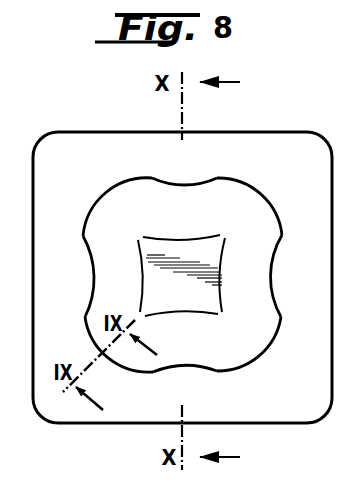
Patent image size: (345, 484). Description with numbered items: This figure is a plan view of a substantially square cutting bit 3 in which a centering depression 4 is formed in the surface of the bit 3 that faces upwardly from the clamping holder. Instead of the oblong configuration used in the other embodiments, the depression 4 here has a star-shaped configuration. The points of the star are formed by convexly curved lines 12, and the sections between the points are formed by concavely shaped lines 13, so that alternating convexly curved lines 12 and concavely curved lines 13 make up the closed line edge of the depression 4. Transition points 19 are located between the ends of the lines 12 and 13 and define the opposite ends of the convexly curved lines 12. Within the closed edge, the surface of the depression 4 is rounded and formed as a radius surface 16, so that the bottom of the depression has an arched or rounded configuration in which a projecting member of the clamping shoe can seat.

The cutting bit 3 is at (65, 436).
The depression 4 is at (176, 298).
The convexly curved lines 12 is at (106, 195).
The concavely curved lines 13 is at (184, 190).
The radius surface 16 is at (224, 199).
The transition points 19 is at (150, 177).